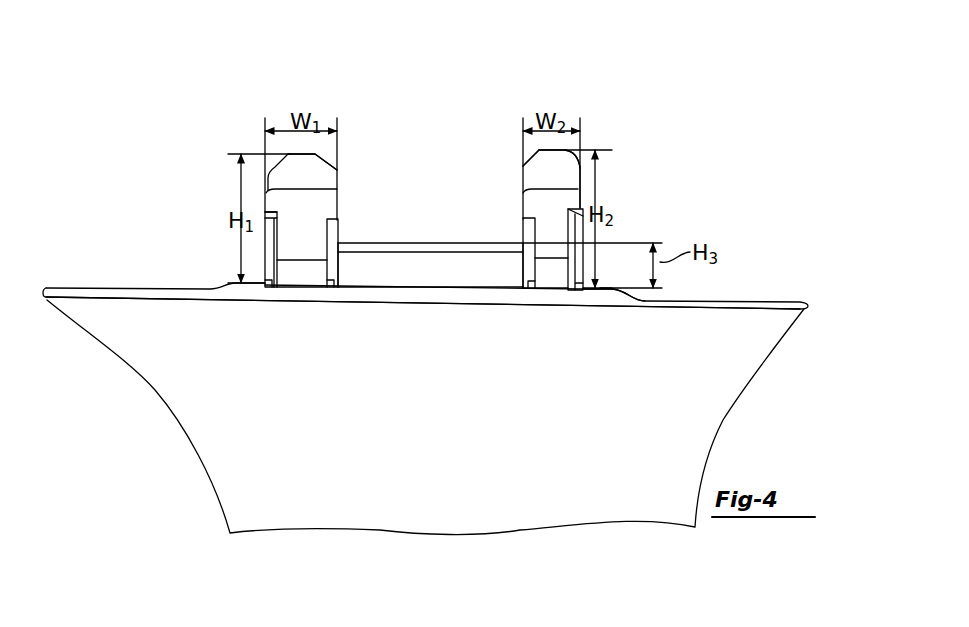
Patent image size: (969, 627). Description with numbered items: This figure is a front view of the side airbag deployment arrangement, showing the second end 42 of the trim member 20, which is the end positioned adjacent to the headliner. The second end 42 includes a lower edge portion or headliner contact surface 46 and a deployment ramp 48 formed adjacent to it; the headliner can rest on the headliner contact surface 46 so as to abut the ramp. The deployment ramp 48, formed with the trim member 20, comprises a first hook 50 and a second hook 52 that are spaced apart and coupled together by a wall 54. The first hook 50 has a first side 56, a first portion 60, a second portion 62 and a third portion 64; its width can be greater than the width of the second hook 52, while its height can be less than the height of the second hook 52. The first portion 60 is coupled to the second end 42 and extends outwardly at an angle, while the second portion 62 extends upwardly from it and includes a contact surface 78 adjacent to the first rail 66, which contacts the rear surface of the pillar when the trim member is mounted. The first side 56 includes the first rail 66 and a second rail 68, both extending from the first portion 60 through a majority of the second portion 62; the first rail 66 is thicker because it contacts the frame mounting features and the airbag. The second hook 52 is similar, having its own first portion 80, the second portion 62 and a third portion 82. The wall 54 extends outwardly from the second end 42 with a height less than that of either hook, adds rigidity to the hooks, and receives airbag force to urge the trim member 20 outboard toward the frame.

The trim member 20 is at (755, 388).
The second end 42 is at (718, 290).
The headliner contact surface 46 is at (600, 298).
The deployment ramp 48 is at (516, 100).
The first hook 50 is at (340, 160).
The second hook 52 is at (622, 160).
The wall 54 is at (432, 240).
The first side 56 is at (262, 213).
The first portion 60 is at (303, 268).
The second portion 62 is at (342, 210).
The third portion 64 is at (303, 173).
The first rail 66 is at (268, 287).
The second rail 68 is at (333, 290).
The contact surface 78 is at (307, 200).
The first portion 80 is at (551, 270).
The third portion 82 is at (545, 176).